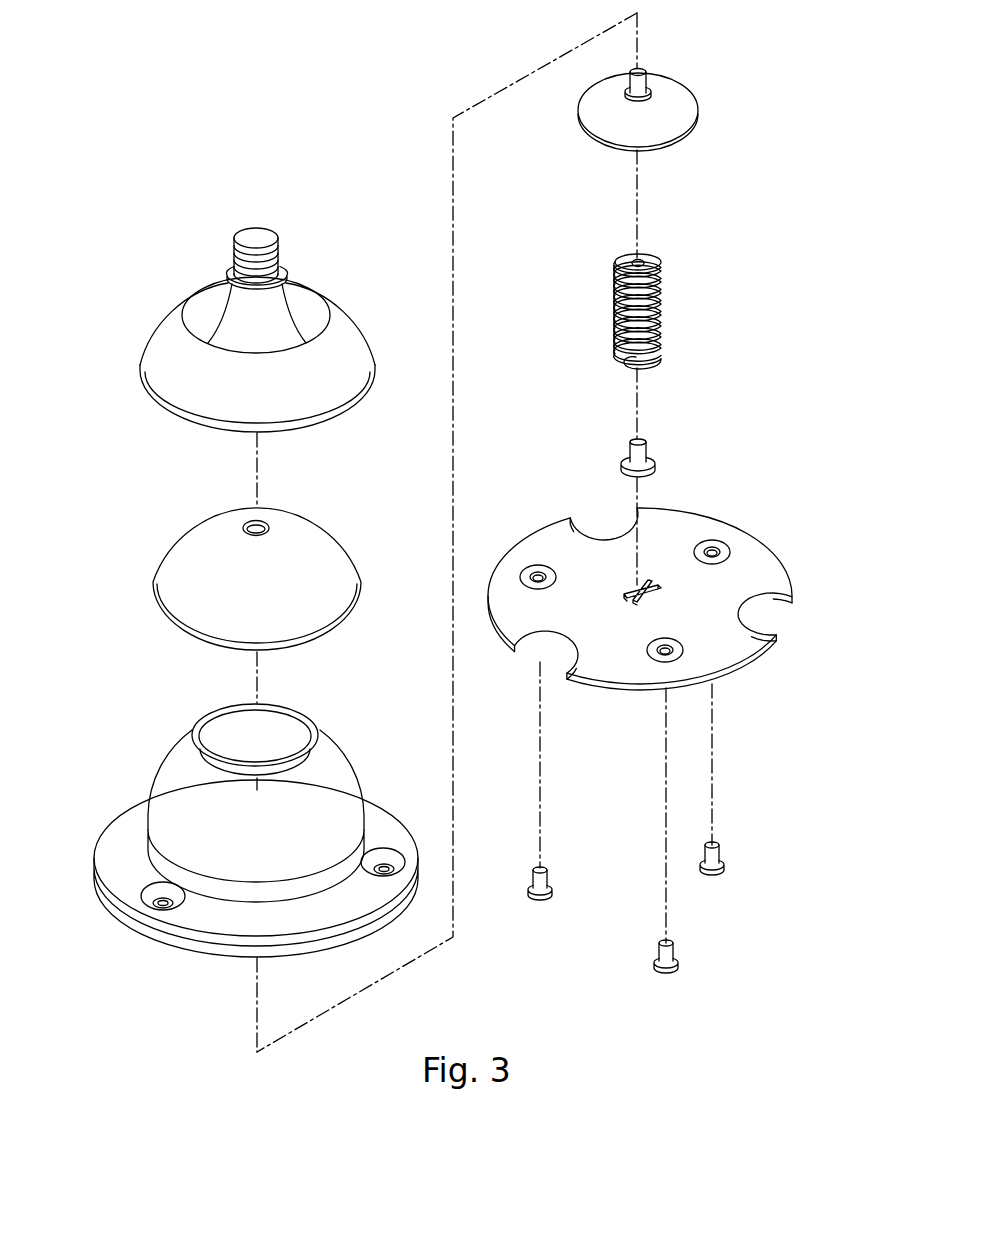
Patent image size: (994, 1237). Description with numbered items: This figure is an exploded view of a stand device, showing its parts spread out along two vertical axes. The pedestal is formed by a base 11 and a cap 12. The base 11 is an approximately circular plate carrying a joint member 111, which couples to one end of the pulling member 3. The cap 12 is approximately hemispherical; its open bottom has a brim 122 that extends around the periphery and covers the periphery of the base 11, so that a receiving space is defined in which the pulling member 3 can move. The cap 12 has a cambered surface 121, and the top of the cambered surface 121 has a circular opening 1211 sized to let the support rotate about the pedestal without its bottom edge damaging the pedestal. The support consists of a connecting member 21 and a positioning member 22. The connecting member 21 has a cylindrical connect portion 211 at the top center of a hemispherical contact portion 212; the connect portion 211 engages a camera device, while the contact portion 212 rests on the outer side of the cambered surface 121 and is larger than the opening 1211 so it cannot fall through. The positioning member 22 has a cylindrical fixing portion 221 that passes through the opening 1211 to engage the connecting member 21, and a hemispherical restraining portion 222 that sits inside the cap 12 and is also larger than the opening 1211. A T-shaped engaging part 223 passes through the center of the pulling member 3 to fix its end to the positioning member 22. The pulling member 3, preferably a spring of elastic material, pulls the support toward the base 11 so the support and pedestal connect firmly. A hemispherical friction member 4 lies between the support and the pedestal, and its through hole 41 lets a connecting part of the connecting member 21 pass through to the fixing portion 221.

The base 11 is at (643, 640).
The joint member 111 is at (632, 586).
The cap 12 is at (225, 820).
The cambered surface 121 is at (255, 792).
The opening 1211 is at (277, 737).
The brim 122 is at (125, 847).
The connecting member 21 is at (271, 326).
The connect portion 211 is at (281, 252).
The contact portion 212 is at (333, 355).
The positioning member 22 is at (693, 111).
The fixing portion 221 is at (643, 67).
The restraining portion 222 is at (683, 97).
The engaging part 223 is at (668, 452).
The pulling member 3 is at (678, 322).
The friction member 4 is at (233, 560).
The through hole 41 is at (268, 525).